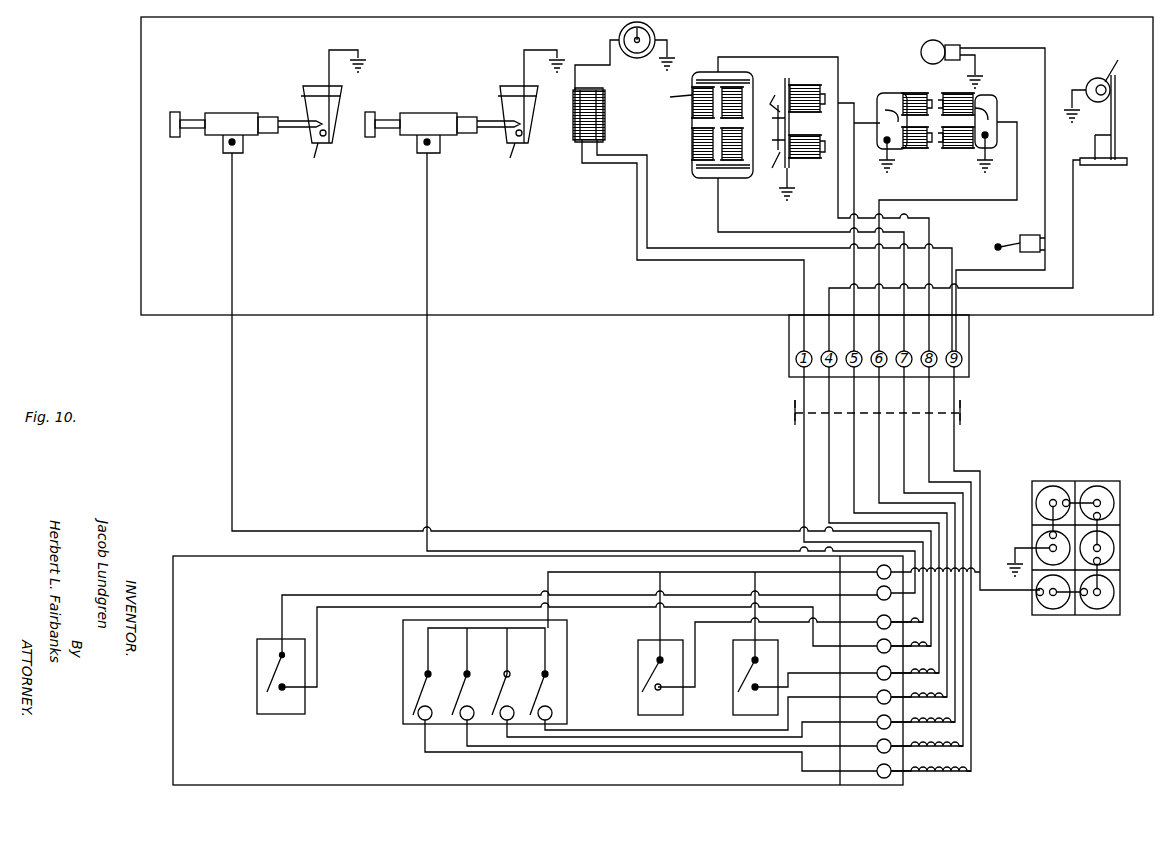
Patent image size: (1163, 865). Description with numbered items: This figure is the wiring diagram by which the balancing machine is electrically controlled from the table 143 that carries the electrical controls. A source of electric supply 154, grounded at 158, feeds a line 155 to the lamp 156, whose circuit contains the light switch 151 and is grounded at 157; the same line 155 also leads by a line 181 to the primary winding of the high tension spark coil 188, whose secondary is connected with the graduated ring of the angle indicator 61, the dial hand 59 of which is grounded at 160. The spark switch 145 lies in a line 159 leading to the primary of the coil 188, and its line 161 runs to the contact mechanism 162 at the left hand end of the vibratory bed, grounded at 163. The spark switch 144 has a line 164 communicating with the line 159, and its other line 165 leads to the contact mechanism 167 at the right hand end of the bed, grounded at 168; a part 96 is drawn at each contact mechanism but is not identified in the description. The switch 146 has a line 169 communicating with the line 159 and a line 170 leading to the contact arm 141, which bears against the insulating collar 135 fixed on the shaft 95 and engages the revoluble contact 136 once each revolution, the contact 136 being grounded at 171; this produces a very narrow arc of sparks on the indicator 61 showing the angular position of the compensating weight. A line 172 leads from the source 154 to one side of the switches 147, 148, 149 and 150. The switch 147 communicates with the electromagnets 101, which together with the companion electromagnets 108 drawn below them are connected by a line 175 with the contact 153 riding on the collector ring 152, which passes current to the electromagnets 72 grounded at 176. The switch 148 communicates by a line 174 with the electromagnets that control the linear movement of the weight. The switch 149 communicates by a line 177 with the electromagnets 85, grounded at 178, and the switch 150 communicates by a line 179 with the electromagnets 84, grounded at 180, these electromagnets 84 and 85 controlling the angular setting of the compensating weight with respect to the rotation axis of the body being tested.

The shaft 95 is at (290, 115).
The contact cup 96 is at (338, 108).
The ground connection 163 is at (370, 68).
The contact mechanism 162 is at (316, 156).
The ground connection 168 is at (558, 52).
The contact mechanism 167 is at (505, 155).
The high tension coil 188 is at (605, 128).
The angle indicator 61 is at (656, 32).
The dial hand 59 is at (638, 70).
The ground connection 160 is at (656, 96).
The electromagnets 101 is at (690, 108).
The relay coil 108 is at (690, 145).
The contact 153 is at (778, 92).
The electromagnets 72 is at (792, 98).
The collector ring 152 is at (773, 127).
The line 175 is at (768, 172).
The ground connection 176 is at (796, 193).
The line 179 is at (853, 100).
The electromagnets 84 is at (917, 100).
The electromagnets 85 is at (956, 100).
The ground connection 180 is at (885, 176).
The line 177 is at (965, 176).
The ground connection 178 is at (987, 174).
The electric light 156 is at (945, 44).
The ground connection 157 is at (977, 86).
The insulating collar 135 is at (1090, 80).
The contact 136 is at (1120, 67).
The spring contact blade 141 is at (1116, 105).
The ground connection 171 is at (1070, 126).
The line 170 is at (1073, 212).
The light switch 151 is at (1030, 235).
The line 181 is at (650, 232).
The line 174 is at (766, 224).
The line 159 is at (670, 264).
The line 155 is at (960, 446).
The source of electric supply 154 is at (1065, 485).
The ground connection 158 is at (1005, 556).
The line 161 is at (645, 528).
The line 172 is at (700, 549).
The line 165 is at (430, 238).
The table 143 is at (172, 758).
The spark switch 145 is at (262, 678).
The switch 147 is at (408, 674).
The switch 148 is at (463, 646).
The switch 149 is at (500, 648).
The switch 150 is at (546, 658).
The spark switch 144 is at (640, 672).
The switch 146 is at (736, 676).
The line 164 is at (655, 612).
The line 169 is at (760, 624).